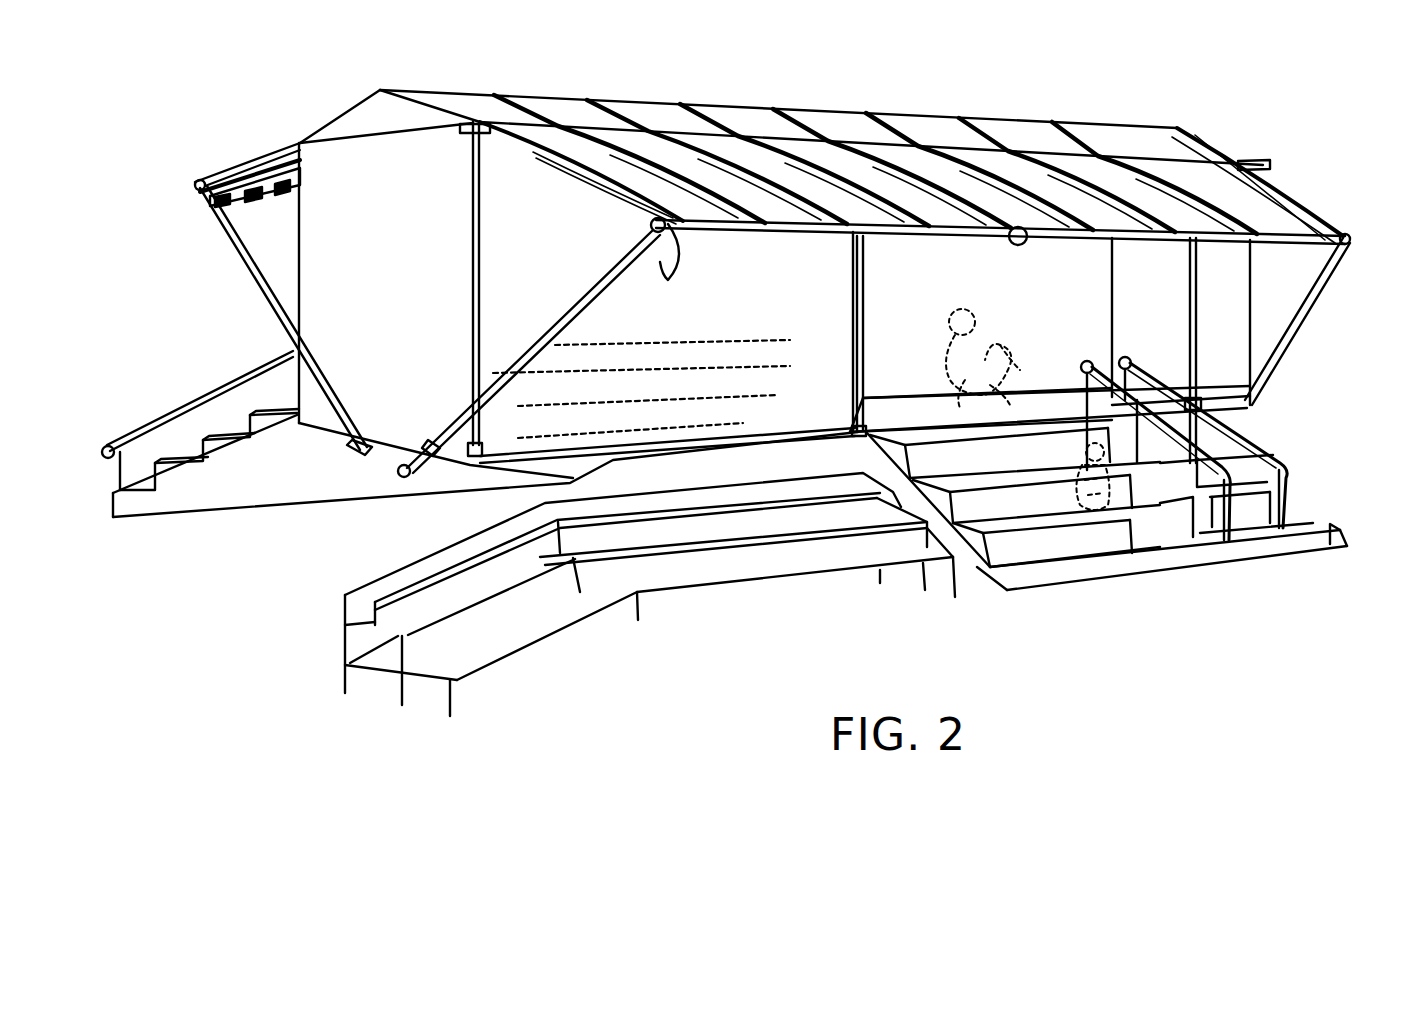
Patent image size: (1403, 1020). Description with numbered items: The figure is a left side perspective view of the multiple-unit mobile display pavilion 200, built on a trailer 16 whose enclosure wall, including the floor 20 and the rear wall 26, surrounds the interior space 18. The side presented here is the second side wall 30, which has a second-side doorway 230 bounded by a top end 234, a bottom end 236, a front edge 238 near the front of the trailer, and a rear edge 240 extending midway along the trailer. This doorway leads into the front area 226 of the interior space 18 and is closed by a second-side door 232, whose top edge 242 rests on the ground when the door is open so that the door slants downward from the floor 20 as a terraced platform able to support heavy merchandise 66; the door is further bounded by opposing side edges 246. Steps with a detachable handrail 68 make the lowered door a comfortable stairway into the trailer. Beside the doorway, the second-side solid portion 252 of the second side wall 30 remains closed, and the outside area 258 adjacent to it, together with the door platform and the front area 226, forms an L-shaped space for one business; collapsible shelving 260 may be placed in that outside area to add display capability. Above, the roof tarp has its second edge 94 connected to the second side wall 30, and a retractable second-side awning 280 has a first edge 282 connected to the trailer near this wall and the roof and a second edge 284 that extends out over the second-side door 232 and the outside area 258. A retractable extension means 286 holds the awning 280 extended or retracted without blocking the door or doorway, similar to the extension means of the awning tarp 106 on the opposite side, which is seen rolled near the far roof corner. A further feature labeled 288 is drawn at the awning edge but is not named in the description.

The multiple-unit mobile display pavilion 200 is at (865, 40).
The awning tarp 106 is at (298, 143).
The rear wall 26 is at (312, 250).
The trailer 16 is at (338, 440).
The second side wall 30 is at (518, 197).
The retractable extension means 286 is at (660, 245).
The second-side solid portion 252 is at (648, 318).
The second edge 94 is at (1178, 128).
The first edge 282 is at (1212, 170).
The canopy fabric edge 288 is at (1227, 203).
The second-side awning 280 is at (1279, 193).
The top end 234 is at (1020, 227).
The second edge 284 is at (1343, 245).
The rear edge 240 is at (864, 277).
The second-side doorway 230 is at (968, 282).
The interior space 18 is at (982, 347).
The front area 226 is at (1047, 350).
The floor 20 is at (913, 428).
The front edge 238 is at (1195, 318).
The detachable handrail 68 is at (1227, 440).
The bottom end 236 is at (1022, 418).
The top edge 242 is at (1088, 572).
The merchandise 66 is at (1103, 522).
The second-side door 232 is at (1159, 531).
The side edge 246 is at (1330, 530).
The collapsible shelving 260 is at (559, 596).
The outside area 258 is at (711, 597).